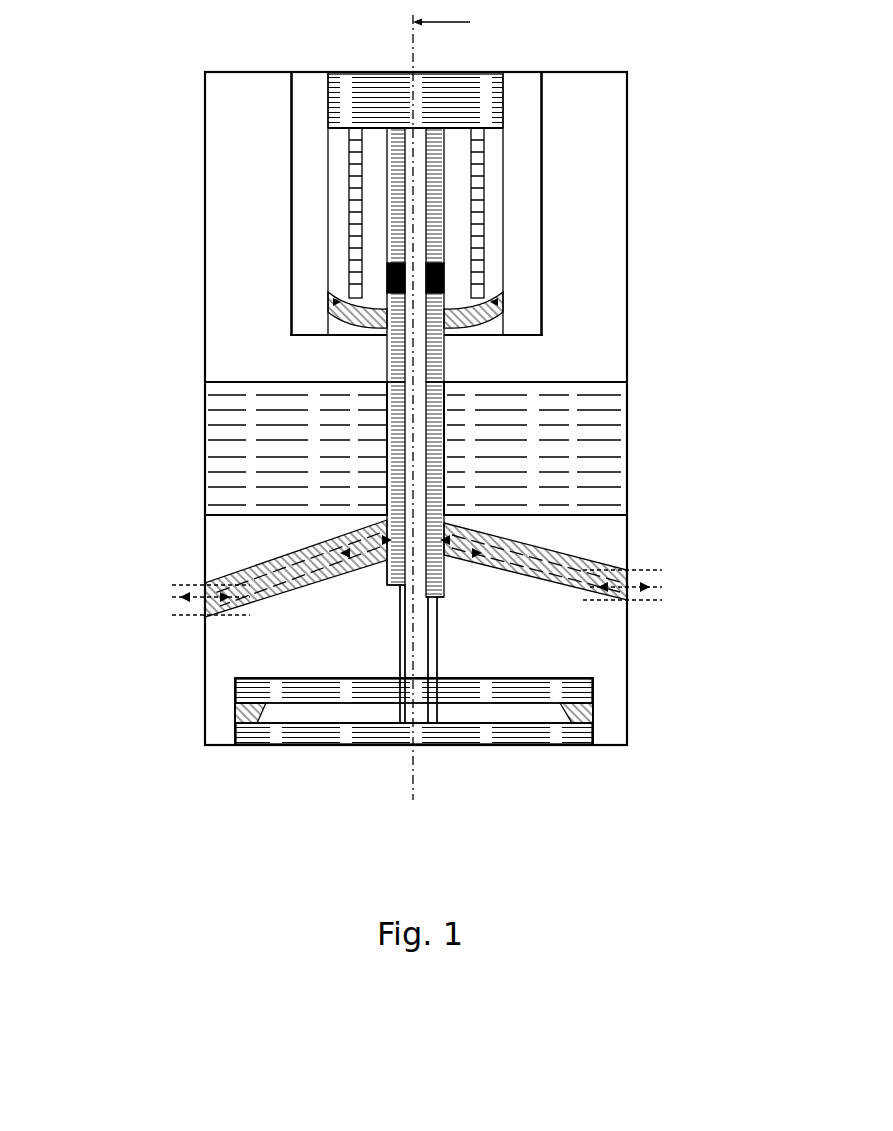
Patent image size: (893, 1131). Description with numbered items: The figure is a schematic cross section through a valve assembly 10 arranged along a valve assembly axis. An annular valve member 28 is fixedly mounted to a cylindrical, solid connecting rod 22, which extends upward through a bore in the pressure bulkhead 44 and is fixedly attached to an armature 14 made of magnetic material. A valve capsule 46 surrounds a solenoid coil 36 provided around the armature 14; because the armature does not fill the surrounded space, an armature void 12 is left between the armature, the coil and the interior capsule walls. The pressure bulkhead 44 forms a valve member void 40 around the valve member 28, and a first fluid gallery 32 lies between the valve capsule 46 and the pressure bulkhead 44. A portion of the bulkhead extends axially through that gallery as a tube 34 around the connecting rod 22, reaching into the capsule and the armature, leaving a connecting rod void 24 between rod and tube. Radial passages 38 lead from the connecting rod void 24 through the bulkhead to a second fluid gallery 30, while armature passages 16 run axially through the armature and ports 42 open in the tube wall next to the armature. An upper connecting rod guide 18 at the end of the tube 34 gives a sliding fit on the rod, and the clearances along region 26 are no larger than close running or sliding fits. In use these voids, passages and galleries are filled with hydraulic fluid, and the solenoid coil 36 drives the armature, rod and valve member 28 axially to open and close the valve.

The valve assembly 10 is at (180, 106).
The armature void 12 is at (447, 93).
The armature 14 is at (460, 150).
The armature passages 16 is at (450, 178).
The upper connecting rod guide 18 is at (447, 284).
The connecting rod 22 is at (405, 407).
The connecting rod void 24 is at (440, 470).
The region 26 is at (437, 637).
The annular valve member 28 is at (540, 708).
The second fluid gallery 30 is at (225, 583).
The first fluid gallery 32 is at (275, 408).
The tube 34 is at (382, 357).
The solenoid coil 36 is at (313, 148).
The radial passages 38 is at (270, 570).
The valve member void 40 is at (235, 693).
The ports 42 is at (375, 302).
The pressure bulkhead 44 is at (583, 542).
The valve capsule 46 is at (260, 245).